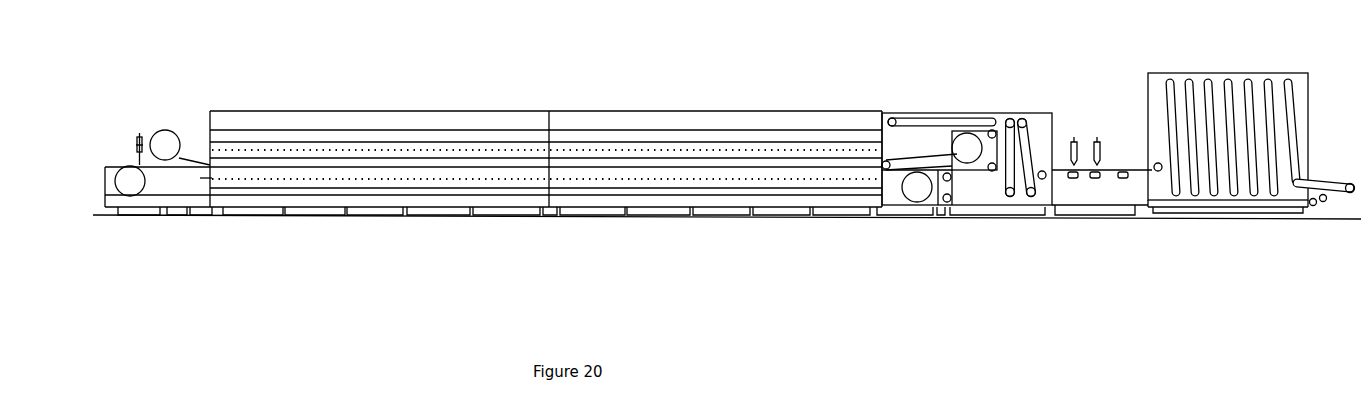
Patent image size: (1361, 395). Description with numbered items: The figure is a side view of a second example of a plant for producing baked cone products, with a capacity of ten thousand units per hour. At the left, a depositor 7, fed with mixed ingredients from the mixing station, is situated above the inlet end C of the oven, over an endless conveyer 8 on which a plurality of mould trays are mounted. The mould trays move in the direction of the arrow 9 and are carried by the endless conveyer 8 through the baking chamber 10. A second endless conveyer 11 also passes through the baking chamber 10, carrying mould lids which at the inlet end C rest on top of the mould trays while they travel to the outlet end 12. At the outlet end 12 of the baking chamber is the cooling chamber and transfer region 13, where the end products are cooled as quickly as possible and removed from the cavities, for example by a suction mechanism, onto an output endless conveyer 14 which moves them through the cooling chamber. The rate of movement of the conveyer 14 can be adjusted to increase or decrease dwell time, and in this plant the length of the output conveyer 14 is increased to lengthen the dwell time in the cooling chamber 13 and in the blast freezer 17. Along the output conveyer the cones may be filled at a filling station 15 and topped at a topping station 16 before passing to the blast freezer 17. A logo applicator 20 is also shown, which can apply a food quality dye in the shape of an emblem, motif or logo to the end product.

The depositor 7 is at (140, 133).
The endless conveyer 8 is at (173, 162).
The arrow 9 is at (420, 93).
The baking chamber 10 is at (620, 111).
The second endless conveyer 11 is at (190, 145).
The outlet end 12 is at (886, 143).
The cooling chamber and transfer region 13 is at (980, 224).
The output endless conveyer 14 is at (957, 113).
The filling station 15 is at (1073, 137).
The topping station 16 is at (1097, 137).
The blast freezer 17 is at (1251, 111).
The logo applicator 20 is at (1123, 182).
The inlet end C is at (208, 180).